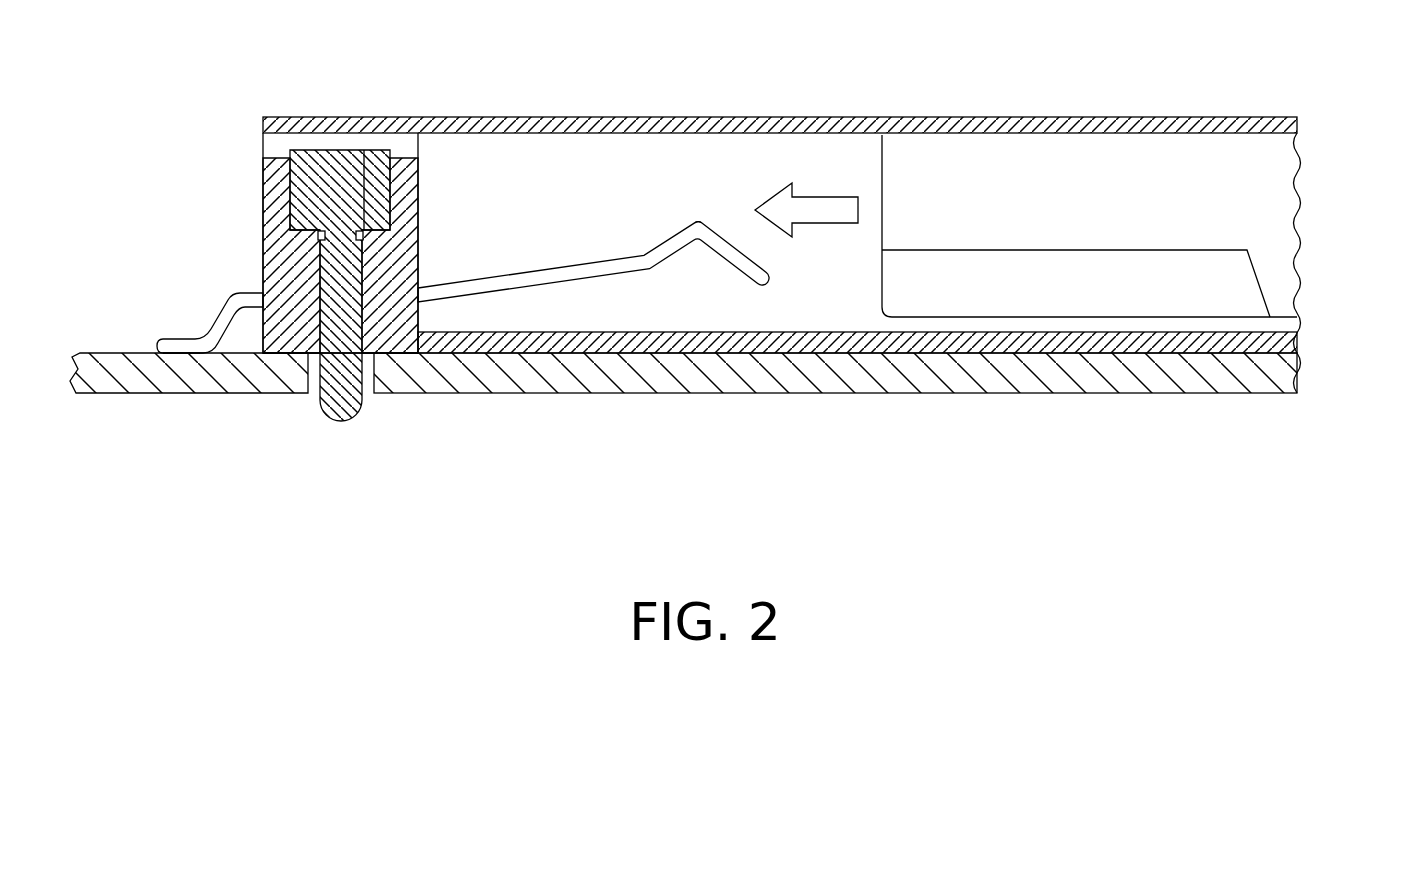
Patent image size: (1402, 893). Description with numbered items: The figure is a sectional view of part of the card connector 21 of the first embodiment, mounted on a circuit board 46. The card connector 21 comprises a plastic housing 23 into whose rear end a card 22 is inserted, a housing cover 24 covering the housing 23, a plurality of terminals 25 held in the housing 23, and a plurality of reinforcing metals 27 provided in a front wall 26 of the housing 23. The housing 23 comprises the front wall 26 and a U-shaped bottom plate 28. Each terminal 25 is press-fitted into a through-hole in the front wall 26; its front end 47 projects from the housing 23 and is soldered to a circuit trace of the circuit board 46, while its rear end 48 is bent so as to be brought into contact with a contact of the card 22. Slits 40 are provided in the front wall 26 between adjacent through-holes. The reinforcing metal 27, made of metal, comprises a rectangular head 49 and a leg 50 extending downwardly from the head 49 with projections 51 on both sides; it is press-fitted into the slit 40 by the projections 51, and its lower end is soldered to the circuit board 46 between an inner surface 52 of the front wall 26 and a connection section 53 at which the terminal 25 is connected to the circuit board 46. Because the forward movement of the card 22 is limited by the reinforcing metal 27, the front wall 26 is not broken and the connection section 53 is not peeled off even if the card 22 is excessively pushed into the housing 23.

The card connector 21 is at (1211, 88).
The card 22 is at (1272, 203).
The housing 23 is at (262, 185).
The housing cover 24 is at (1013, 110).
The terminal 25 is at (544, 297).
The front wall 26 is at (285, 335).
The reinforcing metal 27 is at (337, 142).
The bottom plate 28 is at (693, 340).
The slit 40 is at (367, 296).
The circuit board 46 is at (812, 370).
The front end 47 is at (190, 332).
The rear end 48 is at (700, 221).
The rectangular head 49 is at (367, 170).
The leg 50 is at (345, 420).
The projections 51 is at (317, 250).
The inner surface 52 is at (422, 180).
The connection section 53 is at (170, 338).